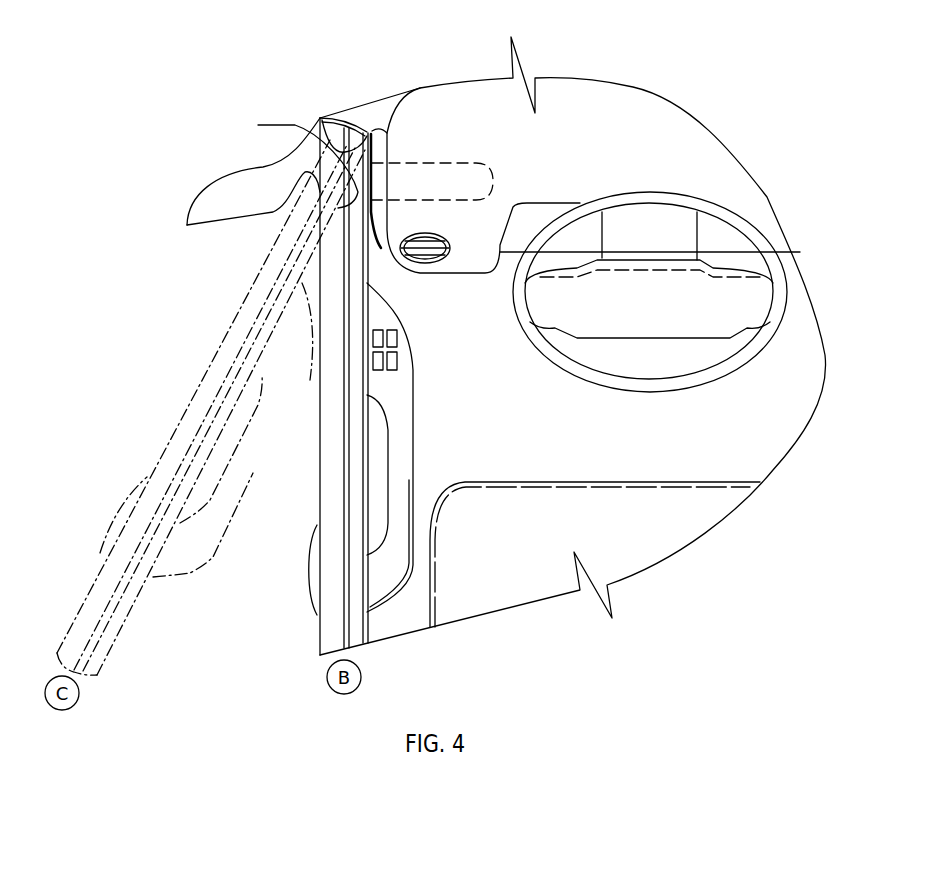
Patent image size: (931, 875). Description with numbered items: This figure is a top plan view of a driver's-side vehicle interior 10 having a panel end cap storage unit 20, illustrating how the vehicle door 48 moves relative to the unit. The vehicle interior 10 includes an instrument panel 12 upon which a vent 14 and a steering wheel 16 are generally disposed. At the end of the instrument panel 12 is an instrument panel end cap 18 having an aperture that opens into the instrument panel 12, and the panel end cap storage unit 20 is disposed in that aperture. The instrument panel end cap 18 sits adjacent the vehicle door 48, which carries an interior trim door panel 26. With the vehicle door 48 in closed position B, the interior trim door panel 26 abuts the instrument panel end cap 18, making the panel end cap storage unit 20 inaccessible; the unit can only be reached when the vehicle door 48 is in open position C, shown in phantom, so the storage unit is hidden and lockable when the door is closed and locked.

The vehicle interior 10 is at (699, 96).
The instrument panel 12 is at (619, 148).
The vent 14 is at (433, 264).
The steering wheel 16 is at (615, 381).
The instrument panel end cap 18 is at (374, 255).
The panel end cap storage unit 20 is at (458, 162).
The interior trim door panel 26 is at (325, 117).
The vehicle door 48 is at (168, 384).